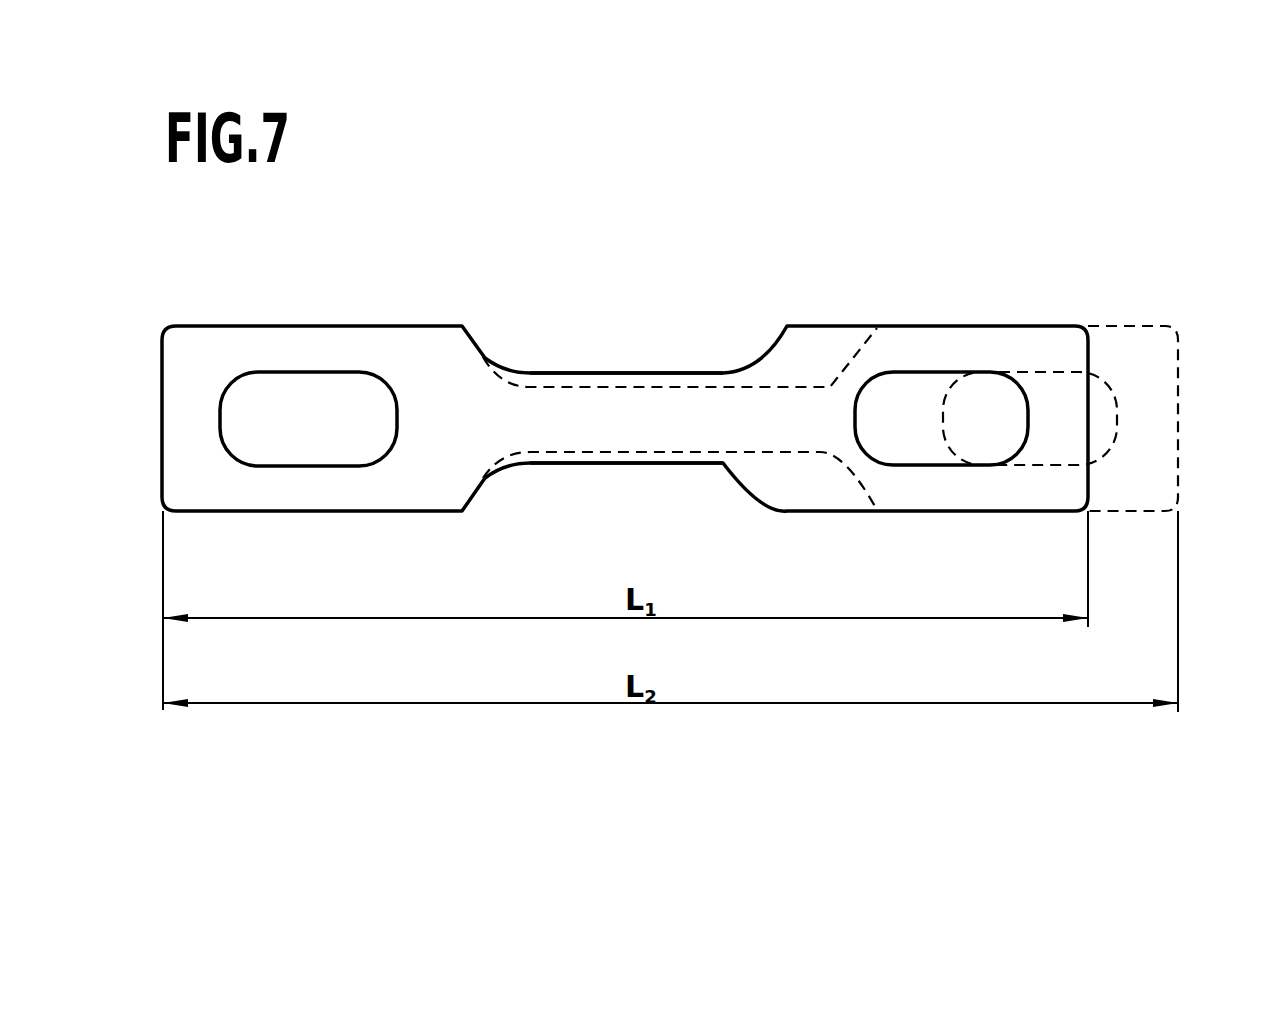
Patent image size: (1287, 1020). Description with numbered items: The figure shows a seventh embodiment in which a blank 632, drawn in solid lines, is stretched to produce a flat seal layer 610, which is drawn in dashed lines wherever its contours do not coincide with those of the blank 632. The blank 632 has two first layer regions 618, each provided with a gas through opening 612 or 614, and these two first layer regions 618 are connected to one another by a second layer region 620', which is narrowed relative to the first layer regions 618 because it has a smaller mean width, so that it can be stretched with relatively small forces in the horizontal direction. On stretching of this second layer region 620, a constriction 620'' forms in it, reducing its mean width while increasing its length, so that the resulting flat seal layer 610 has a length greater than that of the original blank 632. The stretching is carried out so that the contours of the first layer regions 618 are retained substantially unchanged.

The flat seal layer 610 is at (1127, 490).
The gas through opening 612 is at (270, 463).
The gas through opening 614 is at (905, 378).
The first layer region 618 is at (357, 483).
The second layer region 620 is at (626, 477).
The second layer region 620' is at (640, 522).
The constriction 620'' is at (680, 363).
The blank 632 is at (340, 347).